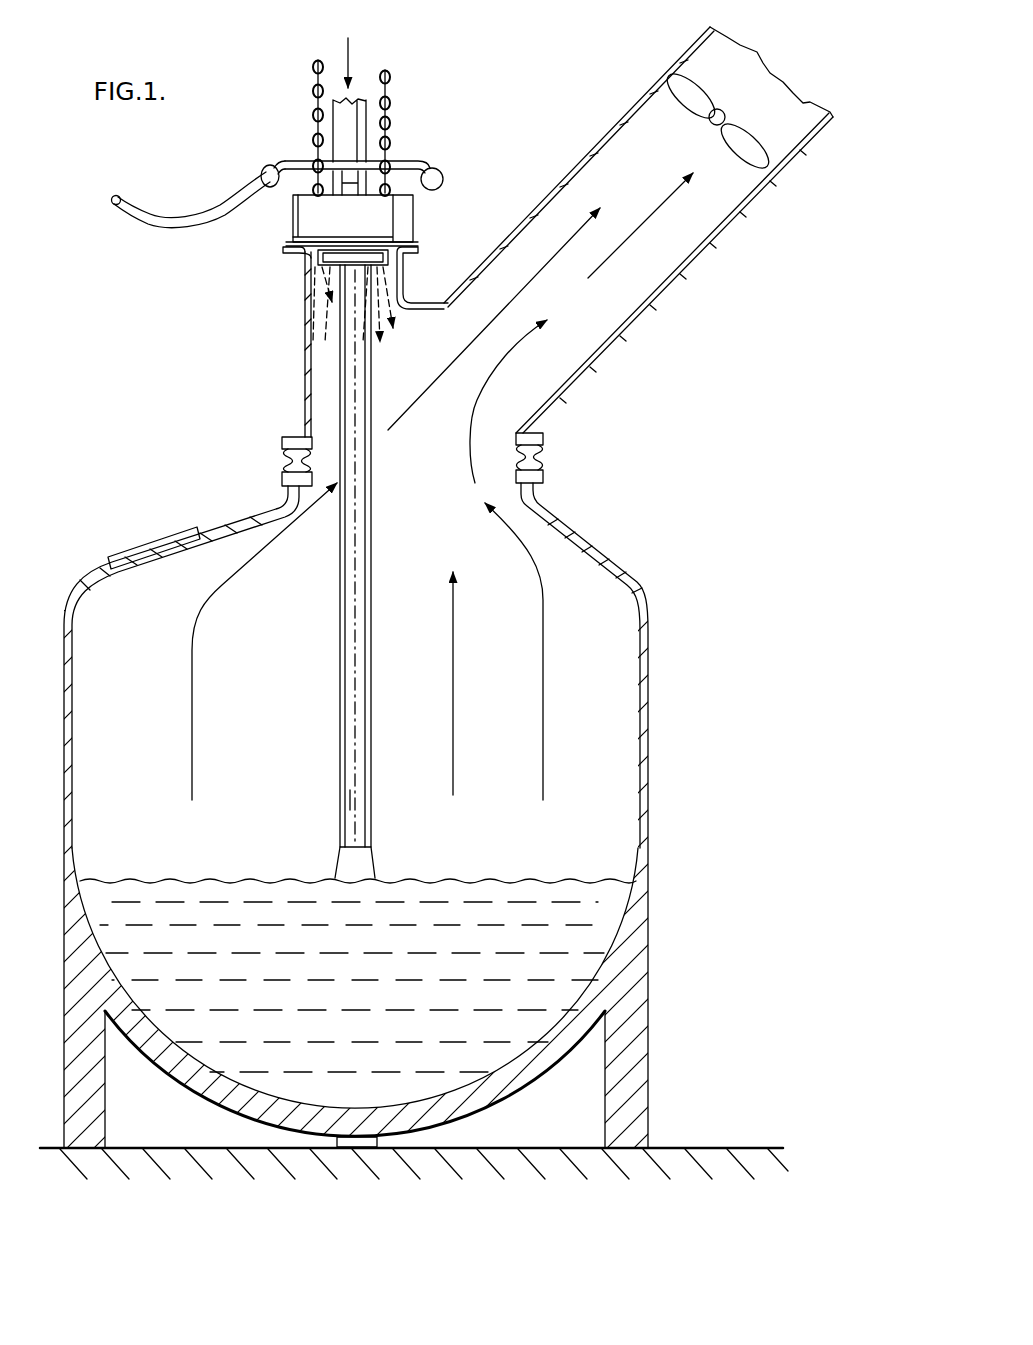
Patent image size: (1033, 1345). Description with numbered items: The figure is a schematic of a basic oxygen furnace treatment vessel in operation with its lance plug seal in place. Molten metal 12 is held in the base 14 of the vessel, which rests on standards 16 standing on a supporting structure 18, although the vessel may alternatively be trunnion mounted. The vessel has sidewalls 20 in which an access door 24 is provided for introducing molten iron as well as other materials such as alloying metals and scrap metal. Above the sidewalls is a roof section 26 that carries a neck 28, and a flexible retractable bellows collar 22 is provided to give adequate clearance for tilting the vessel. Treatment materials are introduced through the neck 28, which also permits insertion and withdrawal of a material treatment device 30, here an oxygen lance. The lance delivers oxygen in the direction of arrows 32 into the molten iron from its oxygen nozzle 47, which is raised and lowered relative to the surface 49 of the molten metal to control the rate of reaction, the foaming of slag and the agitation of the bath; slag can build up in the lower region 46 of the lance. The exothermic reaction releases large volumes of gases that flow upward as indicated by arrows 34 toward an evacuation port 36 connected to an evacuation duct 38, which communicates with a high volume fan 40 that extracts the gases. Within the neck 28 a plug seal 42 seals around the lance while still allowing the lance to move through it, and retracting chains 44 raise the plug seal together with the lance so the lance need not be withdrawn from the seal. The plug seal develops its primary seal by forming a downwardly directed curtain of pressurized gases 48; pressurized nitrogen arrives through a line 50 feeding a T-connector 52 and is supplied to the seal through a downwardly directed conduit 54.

The molten metal 12 is at (476, 900).
The base 14 is at (104, 969).
The standards 16 is at (633, 1040).
The supporting structure 18 is at (541, 1162).
The sidewalls 20 is at (643, 610).
The flexible retractable bellows collar 22 is at (278, 454).
The access door 24 is at (144, 538).
The roof section 26 is at (300, 432).
The neck 28 is at (411, 284).
The material treatment device 30 is at (360, 480).
The arrows 32 is at (372, 877).
The arrows 34 is at (428, 392).
The evacuation port 36 is at (478, 418).
The evacuation duct 38 is at (697, 253).
The high volume fan 40 is at (709, 120).
The plug seal 42 is at (409, 222).
The retracting chains 44 is at (388, 73).
The lower region 46 is at (350, 800).
The oxygen nozzle 47 is at (335, 877).
The curtain of pressurized gases 48 is at (323, 312).
The surface 49 is at (140, 880).
The line 50 is at (232, 198).
The T-connector 52 is at (353, 170).
The downwardly directed conduit 54 is at (363, 187).